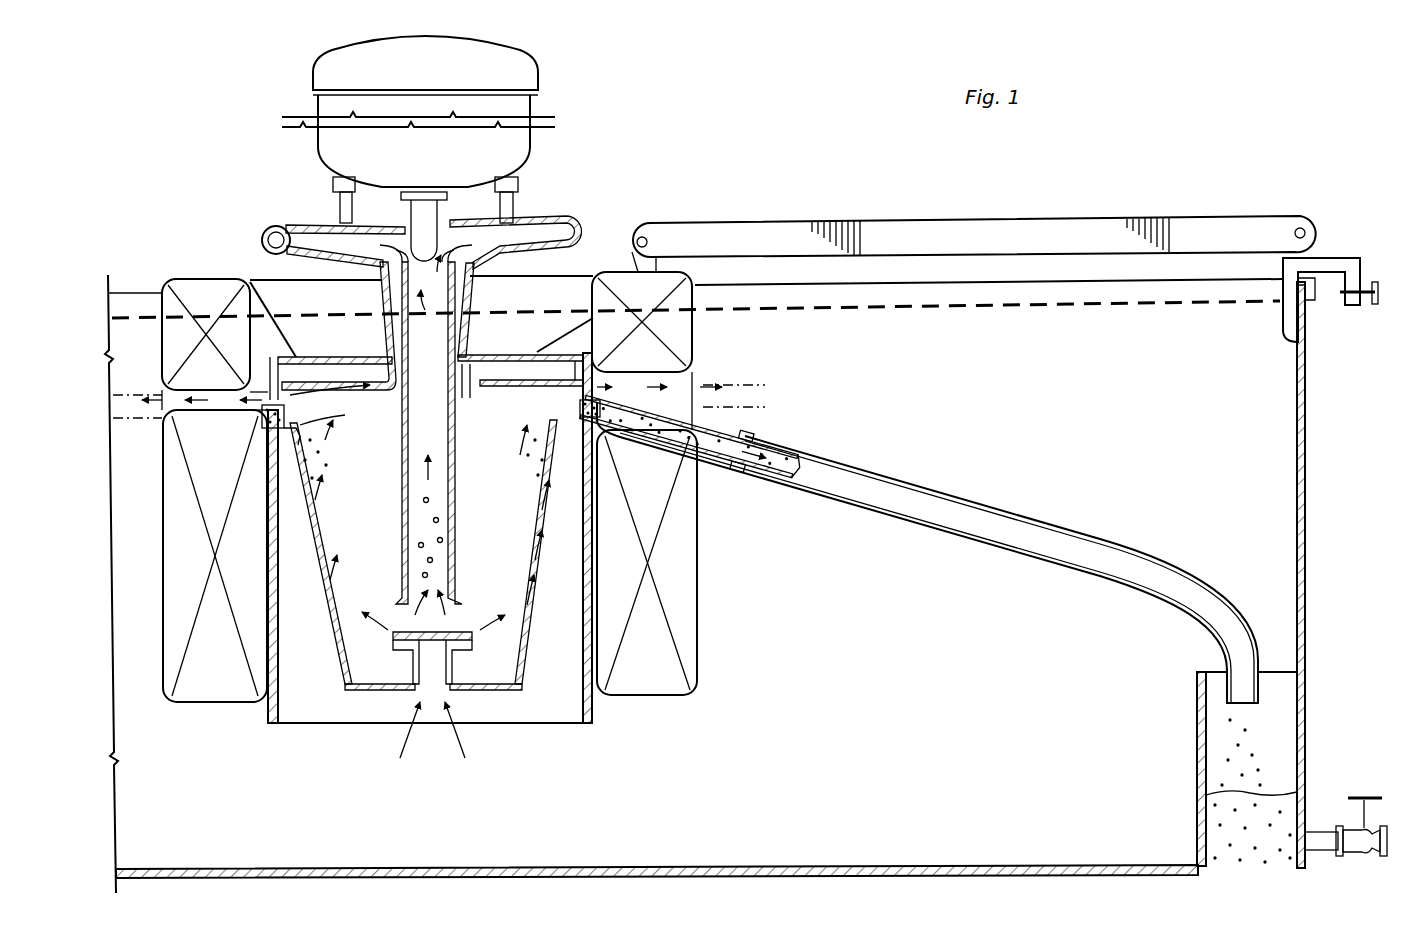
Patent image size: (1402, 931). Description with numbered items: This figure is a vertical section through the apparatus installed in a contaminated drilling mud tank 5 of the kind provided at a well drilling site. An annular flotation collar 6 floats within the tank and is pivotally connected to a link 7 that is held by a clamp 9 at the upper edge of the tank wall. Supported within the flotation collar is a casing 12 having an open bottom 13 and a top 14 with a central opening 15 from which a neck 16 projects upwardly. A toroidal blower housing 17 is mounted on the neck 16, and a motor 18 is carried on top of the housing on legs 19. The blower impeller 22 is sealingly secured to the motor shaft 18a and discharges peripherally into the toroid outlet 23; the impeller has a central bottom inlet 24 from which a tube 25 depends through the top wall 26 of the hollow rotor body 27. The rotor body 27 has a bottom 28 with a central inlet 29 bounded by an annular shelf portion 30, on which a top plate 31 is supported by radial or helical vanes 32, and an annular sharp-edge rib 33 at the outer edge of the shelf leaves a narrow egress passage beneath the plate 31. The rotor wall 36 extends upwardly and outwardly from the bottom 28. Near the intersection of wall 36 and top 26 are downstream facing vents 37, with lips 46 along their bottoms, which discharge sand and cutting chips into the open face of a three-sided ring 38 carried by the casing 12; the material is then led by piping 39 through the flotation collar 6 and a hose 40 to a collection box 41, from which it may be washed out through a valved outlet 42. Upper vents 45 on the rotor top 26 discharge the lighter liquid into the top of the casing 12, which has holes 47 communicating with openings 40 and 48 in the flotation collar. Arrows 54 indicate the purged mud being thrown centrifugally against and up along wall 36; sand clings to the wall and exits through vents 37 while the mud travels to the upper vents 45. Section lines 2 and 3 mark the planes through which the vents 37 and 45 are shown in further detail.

The section line 2- 2 is at (131, 410).
The section line 3- 3 is at (131, 392).
The mud tank 5 is at (1306, 470).
The annular flotation collar 6 is at (700, 610).
The link 7 is at (880, 216).
The clamp 9 is at (1340, 258).
The casing 12 is at (593, 715).
The open bottom 13 is at (530, 723).
The top 14 is at (366, 357).
The central opening 15 is at (474, 350).
The neck 16 is at (474, 298).
The toroidal blower housing 17 is at (535, 252).
The motor 18 is at (532, 136).
The motor shaft 18a is at (412, 210).
The legs 19 is at (340, 198).
The blower impeller 22 is at (338, 222).
The toroid outlet 23 is at (262, 238).
The central bottom inlet 24 is at (437, 275).
The tube 25 is at (386, 295).
The top wall 26 is at (362, 388).
The hollow rotor body 27 is at (540, 598).
The bottom 28 is at (376, 690).
The central inlet 29 is at (435, 690).
The annular shelf portion 30 is at (462, 650).
The top plate 31 is at (462, 622).
The radial or helical vanes 32 is at (406, 650).
The annular sharp-edge rib 33 is at (392, 642).
The wall 36 is at (532, 637).
The downstream facing vents 37 is at (290, 435).
The three-sided ring 38 is at (262, 425).
The piping 39 is at (710, 468).
The hose 40 is at (660, 452).
The collection box 41 is at (1198, 745).
The valved outlet 42 is at (1330, 855).
The downstream facing vents 45 is at (548, 380).
The lip 46 is at (320, 432).
The holes 47 is at (600, 380).
The opening 48 is at (210, 392).
The arrows 54 is at (528, 476).